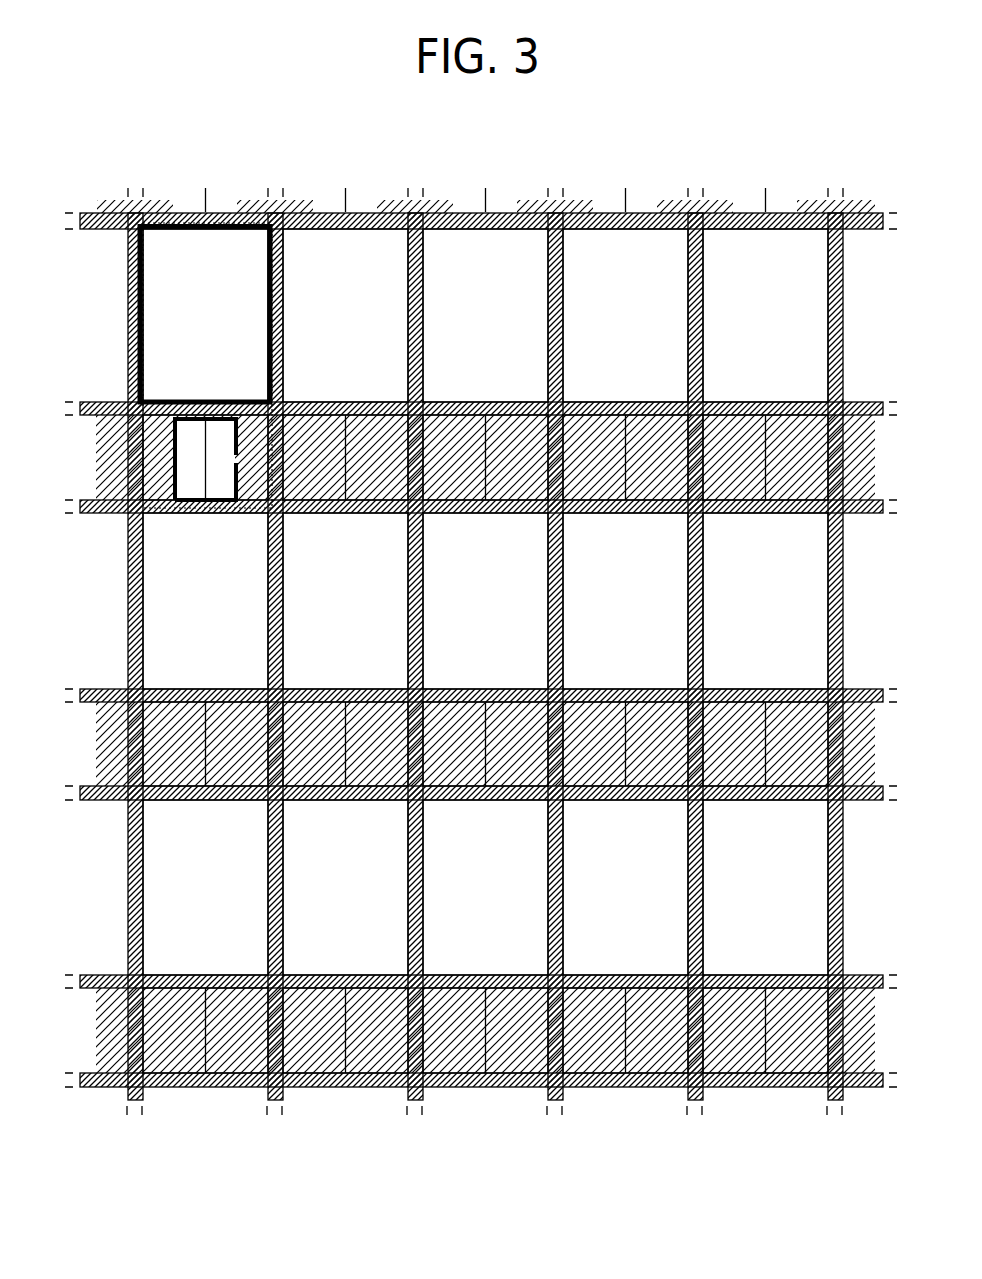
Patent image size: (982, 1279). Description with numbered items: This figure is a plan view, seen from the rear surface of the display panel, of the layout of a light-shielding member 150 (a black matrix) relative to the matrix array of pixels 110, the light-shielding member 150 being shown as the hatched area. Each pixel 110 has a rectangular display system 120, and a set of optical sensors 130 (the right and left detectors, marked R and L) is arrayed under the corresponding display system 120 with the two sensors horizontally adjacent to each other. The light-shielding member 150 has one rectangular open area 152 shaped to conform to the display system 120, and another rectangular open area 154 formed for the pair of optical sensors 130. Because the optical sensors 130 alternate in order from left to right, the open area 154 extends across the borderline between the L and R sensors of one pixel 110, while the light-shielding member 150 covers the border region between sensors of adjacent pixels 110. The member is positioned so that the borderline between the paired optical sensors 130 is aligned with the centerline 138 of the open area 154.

The pixel 110 is at (138, 258).
The display system 120 is at (485, 602).
The optical sensors 130 is at (485, 744).
The centerline 138 is at (208, 490).
The light-shielding member 150 is at (110, 454).
The rectangular open area 152 is at (141, 335).
The rectangular open area 154 is at (186, 502).